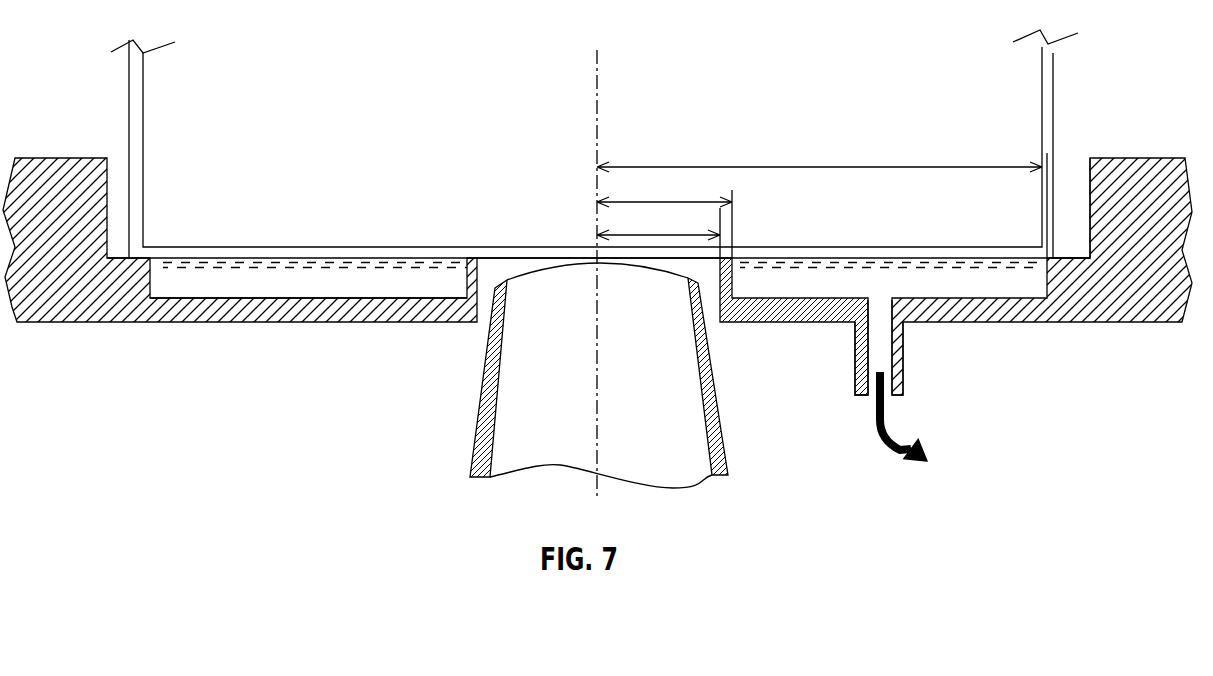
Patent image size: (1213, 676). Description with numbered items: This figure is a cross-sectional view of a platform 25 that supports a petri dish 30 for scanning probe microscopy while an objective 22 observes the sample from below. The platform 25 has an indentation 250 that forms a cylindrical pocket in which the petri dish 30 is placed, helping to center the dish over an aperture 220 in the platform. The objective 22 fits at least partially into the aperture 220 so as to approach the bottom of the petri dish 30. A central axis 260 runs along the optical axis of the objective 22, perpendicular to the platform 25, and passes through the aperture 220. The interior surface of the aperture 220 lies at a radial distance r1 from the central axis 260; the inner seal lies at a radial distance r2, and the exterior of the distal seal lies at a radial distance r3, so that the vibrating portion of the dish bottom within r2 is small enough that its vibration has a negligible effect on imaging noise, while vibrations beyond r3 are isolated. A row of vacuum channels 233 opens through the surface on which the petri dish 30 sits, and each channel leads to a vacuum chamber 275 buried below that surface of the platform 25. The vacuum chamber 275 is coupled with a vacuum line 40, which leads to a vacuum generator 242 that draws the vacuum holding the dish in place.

The objective 22 is at (667, 447).
The platform 25 is at (1090, 221).
The petri dish 30 is at (143, 218).
The vacuum line 40 is at (905, 350).
The aperture 220 is at (506, 257).
The vacuum channels 233 is at (210, 265).
The vacuum generator 242 is at (880, 443).
The indentation 250 is at (1078, 160).
The central axis 260 is at (597, 148).
The vacuum chamber 275 is at (376, 278).
The radial distance r1 is at (690, 235).
The radial distance r2 is at (712, 202).
The radial distance r3 is at (753, 167).